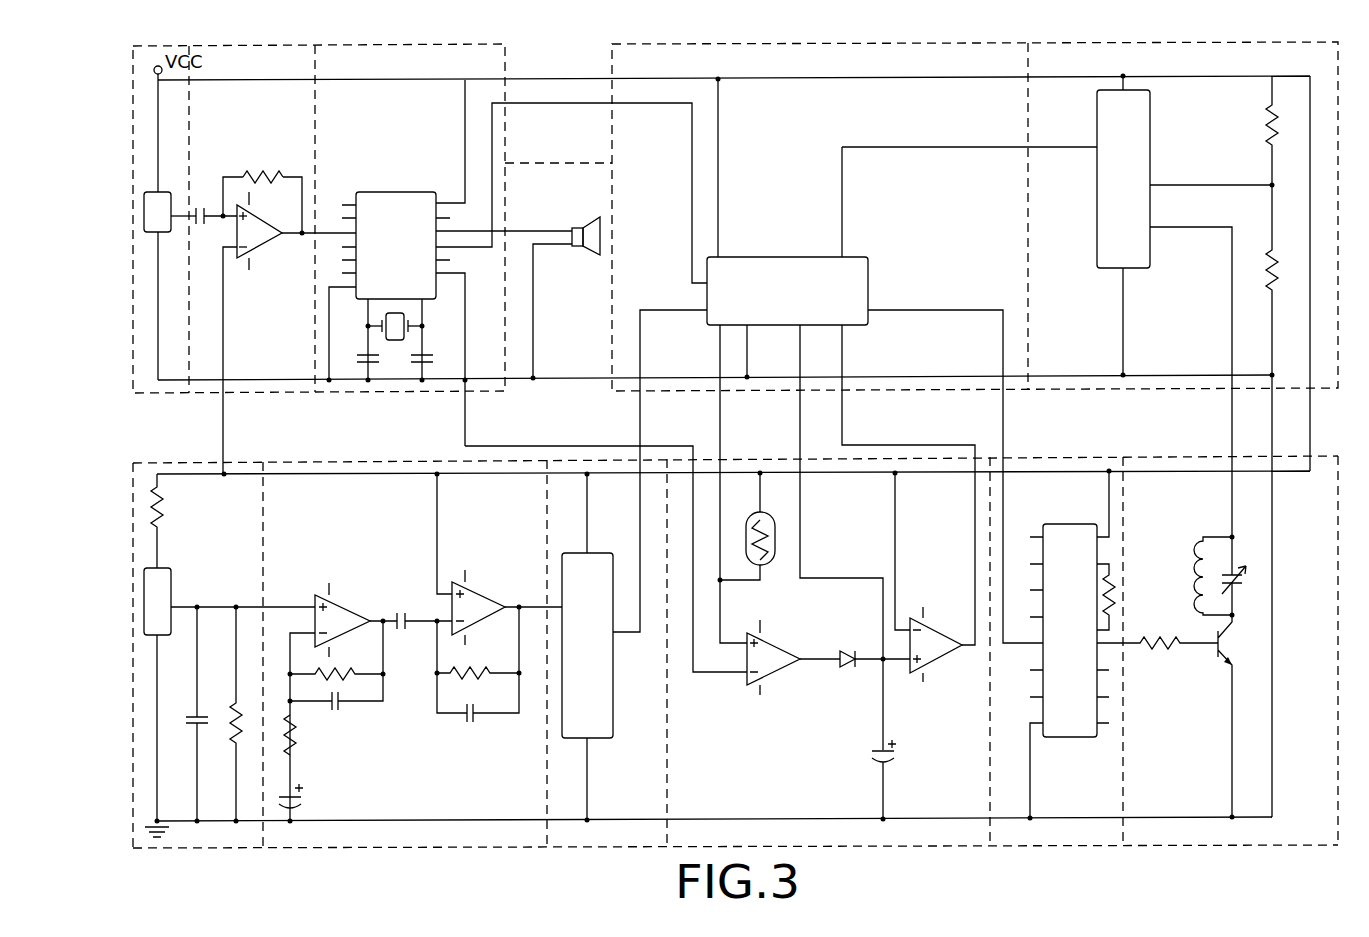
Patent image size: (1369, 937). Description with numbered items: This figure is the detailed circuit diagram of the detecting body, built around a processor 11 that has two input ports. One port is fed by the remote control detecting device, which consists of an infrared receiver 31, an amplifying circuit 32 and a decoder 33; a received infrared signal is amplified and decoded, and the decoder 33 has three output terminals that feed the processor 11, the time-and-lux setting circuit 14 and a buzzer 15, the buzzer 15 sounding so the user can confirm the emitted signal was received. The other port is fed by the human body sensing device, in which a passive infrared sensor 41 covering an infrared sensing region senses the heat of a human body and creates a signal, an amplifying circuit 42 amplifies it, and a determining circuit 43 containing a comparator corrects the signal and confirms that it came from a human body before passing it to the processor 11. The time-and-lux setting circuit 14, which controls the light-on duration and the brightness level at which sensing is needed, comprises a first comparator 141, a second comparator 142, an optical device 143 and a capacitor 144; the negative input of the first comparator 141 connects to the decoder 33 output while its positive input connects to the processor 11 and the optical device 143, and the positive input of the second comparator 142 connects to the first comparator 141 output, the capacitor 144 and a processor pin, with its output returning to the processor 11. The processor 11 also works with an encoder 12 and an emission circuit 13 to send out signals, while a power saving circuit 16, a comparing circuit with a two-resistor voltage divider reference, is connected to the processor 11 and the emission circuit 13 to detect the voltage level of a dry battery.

The processor 11 is at (794, 257).
The encoder 12 is at (1062, 848).
The emission circuit 13 is at (1226, 846).
The time-and-lux setting circuit 14 is at (718, 664).
The first comparator 141 is at (787, 690).
The second comparator 142 is at (921, 677).
The optical device 143 is at (752, 514).
The capacitor 144 is at (907, 780).
The buzzer 15 is at (600, 256).
The power saving circuit 16 is at (1107, 268).
The infrared receiver 31 is at (173, 399).
The amplifying circuit 32 is at (253, 394).
The decoder 33 is at (413, 394).
The passive infrared sensor 41 is at (206, 849).
The amplifying circuit 42 is at (428, 849).
The determining circuit 43 is at (613, 849).